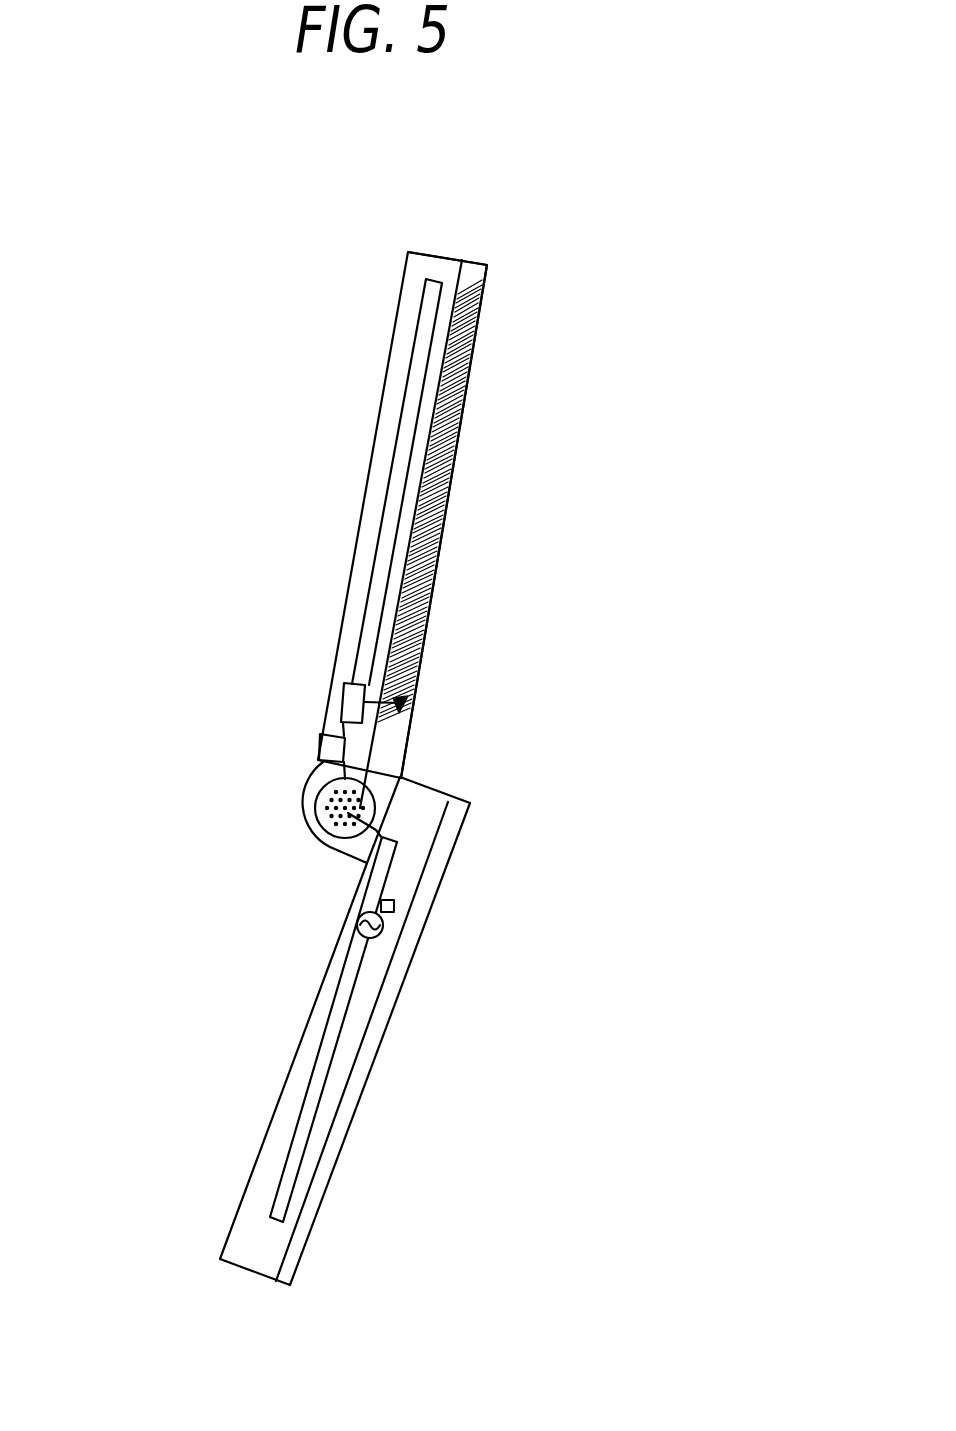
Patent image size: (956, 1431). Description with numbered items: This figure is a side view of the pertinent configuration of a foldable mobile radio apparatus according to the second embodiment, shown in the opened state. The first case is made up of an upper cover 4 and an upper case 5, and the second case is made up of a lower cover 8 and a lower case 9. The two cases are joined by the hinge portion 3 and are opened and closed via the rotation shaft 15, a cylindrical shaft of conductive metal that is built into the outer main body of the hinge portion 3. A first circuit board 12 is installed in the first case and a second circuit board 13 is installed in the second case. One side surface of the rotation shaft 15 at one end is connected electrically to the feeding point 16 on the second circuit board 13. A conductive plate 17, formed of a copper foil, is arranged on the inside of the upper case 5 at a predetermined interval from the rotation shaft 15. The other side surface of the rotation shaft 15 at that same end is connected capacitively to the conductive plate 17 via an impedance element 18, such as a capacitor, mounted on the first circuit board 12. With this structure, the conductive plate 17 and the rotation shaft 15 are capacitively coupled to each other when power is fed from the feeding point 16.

The hinge portion 3 is at (297, 797).
The upper cover 4 is at (398, 369).
The upper case 5 is at (486, 272).
The lower cover 8 is at (283, 1149).
The lower case 9 is at (425, 902).
The first circuit board 12 is at (400, 447).
The second circuit board 13 is at (328, 1082).
The rotation shaft 15 is at (328, 848).
The feeding point 16 is at (365, 935).
The conductive plate 17 is at (433, 572).
The impedance element 18 is at (322, 735).